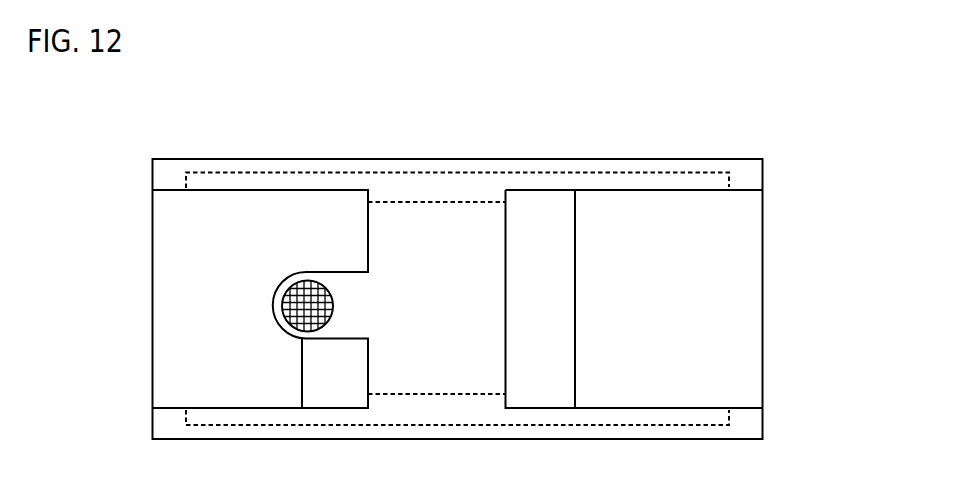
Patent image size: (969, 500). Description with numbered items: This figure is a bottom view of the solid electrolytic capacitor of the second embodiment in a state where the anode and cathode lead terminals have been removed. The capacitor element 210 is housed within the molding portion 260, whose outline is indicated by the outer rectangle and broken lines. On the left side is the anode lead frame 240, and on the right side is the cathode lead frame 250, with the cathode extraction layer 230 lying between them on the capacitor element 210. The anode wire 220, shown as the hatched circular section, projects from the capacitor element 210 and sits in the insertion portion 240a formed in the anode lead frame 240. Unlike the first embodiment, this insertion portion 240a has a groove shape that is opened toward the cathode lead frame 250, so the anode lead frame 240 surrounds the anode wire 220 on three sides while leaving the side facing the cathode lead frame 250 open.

The capacitor element 210 is at (433, 375).
The anode wire 220 is at (303, 333).
The cathode extraction layer 230 is at (435, 190).
The anode lead frame 240 is at (167, 297).
The insertion portion 240a is at (278, 302).
The cathode lead frame 250 is at (748, 297).
The molding portion 260 is at (595, 167).